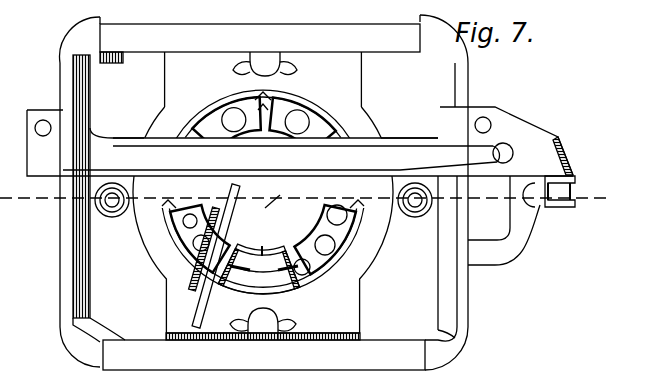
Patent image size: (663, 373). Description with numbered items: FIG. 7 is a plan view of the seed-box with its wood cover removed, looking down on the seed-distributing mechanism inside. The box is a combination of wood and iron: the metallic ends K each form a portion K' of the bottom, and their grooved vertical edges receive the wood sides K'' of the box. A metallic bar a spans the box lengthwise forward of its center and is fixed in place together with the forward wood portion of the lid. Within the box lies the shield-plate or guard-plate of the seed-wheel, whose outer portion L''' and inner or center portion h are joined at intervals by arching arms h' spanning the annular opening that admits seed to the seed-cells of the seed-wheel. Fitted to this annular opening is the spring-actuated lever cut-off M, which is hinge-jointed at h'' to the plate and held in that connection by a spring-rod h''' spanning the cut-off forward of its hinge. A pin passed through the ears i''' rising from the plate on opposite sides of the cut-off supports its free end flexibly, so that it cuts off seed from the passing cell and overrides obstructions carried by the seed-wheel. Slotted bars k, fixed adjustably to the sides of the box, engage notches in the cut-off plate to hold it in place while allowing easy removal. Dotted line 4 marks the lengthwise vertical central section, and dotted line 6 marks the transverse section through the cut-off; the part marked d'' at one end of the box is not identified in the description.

The metallic ends K is at (262, 192).
The bottom portion K' is at (264, 205).
The wood sides K'' is at (262, 197).
The metallic bar a is at (300, 141).
The slotted bars k is at (263, 196).
The outer portion of shield-plate L''' is at (262, 189).
The spring-actuated lever cut-off M is at (258, 269).
The dotted line 6 is at (230, 318).
The inner or center portion of shield-plate h is at (272, 208).
The arching arms h' is at (263, 156).
The hinge joint h'' is at (209, 256).
The spring-rod h''' is at (202, 261).
The ears i''' is at (266, 270).
The bobbin d'' is at (531, 220).
The dotted line 4 is at (312, 193).